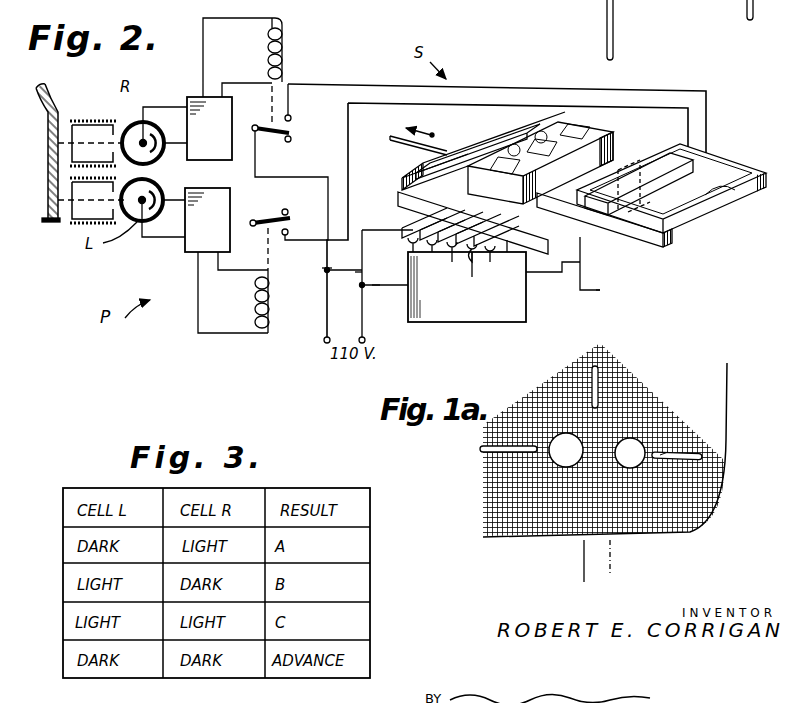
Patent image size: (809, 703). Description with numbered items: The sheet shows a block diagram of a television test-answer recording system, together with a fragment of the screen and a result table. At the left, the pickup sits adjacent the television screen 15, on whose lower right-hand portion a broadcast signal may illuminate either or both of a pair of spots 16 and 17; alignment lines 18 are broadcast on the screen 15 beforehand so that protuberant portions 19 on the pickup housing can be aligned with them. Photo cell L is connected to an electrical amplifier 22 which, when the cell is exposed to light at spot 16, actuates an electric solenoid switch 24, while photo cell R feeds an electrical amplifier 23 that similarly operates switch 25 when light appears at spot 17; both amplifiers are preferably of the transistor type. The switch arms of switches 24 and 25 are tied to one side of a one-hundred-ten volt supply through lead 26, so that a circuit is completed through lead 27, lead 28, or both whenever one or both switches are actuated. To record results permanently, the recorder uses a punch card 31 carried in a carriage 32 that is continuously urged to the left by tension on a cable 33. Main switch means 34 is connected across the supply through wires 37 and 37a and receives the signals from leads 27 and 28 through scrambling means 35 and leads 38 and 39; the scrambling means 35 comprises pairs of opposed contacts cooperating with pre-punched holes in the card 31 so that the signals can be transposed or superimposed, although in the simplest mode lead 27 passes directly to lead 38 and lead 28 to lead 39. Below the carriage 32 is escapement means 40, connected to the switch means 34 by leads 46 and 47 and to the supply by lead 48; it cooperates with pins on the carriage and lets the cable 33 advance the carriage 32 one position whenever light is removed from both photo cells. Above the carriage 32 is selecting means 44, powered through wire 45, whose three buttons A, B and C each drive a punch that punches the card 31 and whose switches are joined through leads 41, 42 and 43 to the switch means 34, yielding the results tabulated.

In FIG. 2, the television screen 15 is at (57, 116).
In FIG. 1A, the television screen 15 is at (710, 396).
In FIG. 2, the spot 16 is at (48, 200).
In FIG. 1A, the spot 16 is at (567, 463).
In FIG. 2, the spot 17 is at (48, 147).
In FIG. 1A, the spot 17 is at (640, 462).
In FIG. 1A, the alignment lines 18 is at (600, 366).
In FIG. 1A, the protuberant portions 19 is at (664, 452).
In FIG. 2, the electrical amplifier 22 is at (185, 252).
In FIG. 2, the electrical amplifier 23 is at (190, 96).
In FIG. 2, the solenoid switch 24 is at (277, 215).
In FIG. 2, the switch 25 is at (272, 146).
In FIG. 2, the lead 26 is at (326, 270).
In FIG. 2, the lead 27 is at (495, 105).
In FIG. 2, the lead 28 is at (520, 91).
In FIG. 2, the punch card 31 is at (705, 180).
In FIG. 2, the carriage 32 is at (650, 242).
In FIG. 2, the cable 33 is at (436, 149).
In FIG. 2, the main switch means 34 is at (472, 320).
In FIG. 2, the scrambling means 35 is at (706, 164).
In FIG. 2, the wire 37 is at (384, 287).
In FIG. 2, the wire 37a is at (355, 274).
In FIG. 2, the lead 38 is at (563, 267).
In FIG. 2, the lead 39 is at (609, 293).
In FIG. 2, the escapement means 40 is at (528, 236).
In FIG. 2, the lead 41 is at (422, 214).
In FIG. 2, the lead 42 is at (410, 204).
In FIG. 2, the lead 43 is at (538, 196).
In FIG. 2, the selecting means 44 is at (615, 150).
In FIG. 2, the wire 45 is at (432, 228).
In FIG. 2, the lead 46 is at (464, 276).
In FIG. 2, the lead 47 is at (500, 268).
In FIG. 2, the lead 48 is at (441, 268).